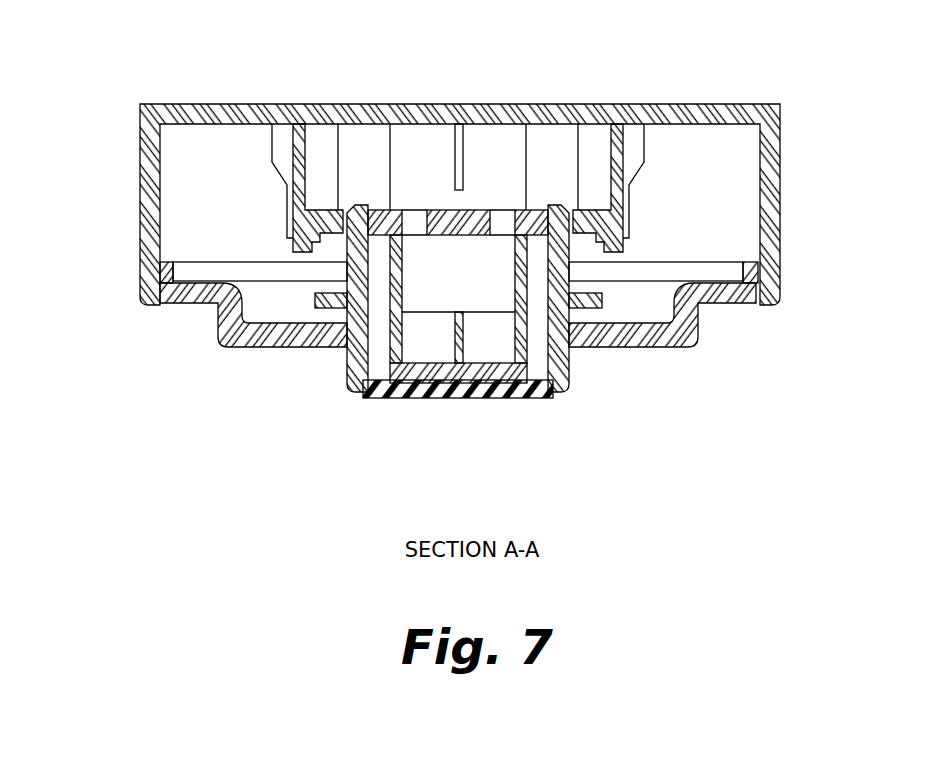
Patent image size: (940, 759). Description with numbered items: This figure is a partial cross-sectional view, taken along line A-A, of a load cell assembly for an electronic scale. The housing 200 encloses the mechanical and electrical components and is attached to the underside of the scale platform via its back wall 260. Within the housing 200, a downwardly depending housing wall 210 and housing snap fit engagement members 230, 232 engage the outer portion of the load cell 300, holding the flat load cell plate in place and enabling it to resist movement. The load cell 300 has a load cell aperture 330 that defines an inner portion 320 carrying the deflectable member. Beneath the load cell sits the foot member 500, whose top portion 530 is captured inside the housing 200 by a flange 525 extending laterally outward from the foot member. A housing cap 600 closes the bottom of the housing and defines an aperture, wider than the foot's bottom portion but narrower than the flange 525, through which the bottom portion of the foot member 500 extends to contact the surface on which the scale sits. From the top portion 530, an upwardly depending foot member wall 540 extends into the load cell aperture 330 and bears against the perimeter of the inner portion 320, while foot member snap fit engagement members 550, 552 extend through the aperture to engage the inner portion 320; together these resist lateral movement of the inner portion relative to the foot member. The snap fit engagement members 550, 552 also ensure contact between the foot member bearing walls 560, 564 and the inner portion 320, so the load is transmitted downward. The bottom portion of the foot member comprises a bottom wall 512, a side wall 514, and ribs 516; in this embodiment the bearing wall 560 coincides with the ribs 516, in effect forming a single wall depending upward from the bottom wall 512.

The housing 200 is at (780, 124).
The housing wall 210 is at (300, 153).
The housing snap fit engagement member 230 is at (703, 104).
The housing snap fit engagement member 232 is at (300, 243).
The back wall 260 is at (460, 104).
The load cell 300 is at (615, 207).
The inner portion 320 is at (418, 104).
The load cell aperture 330 is at (363, 383).
The foot member 500 is at (480, 325).
The bottom wall 512 is at (364, 403).
The side wall 514 is at (572, 362).
The ribs 516 is at (488, 395).
The flange 525 is at (312, 300).
The top portion 530 is at (226, 270).
The foot member wall 540 is at (158, 283).
The foot member snap fit engagement member 550 is at (589, 104).
The foot member snap fit engagement member 552 is at (327, 104).
The foot member bearing wall 560 is at (403, 365).
The foot member bearing wall 564 is at (527, 104).
The housing cap 600 is at (703, 300).